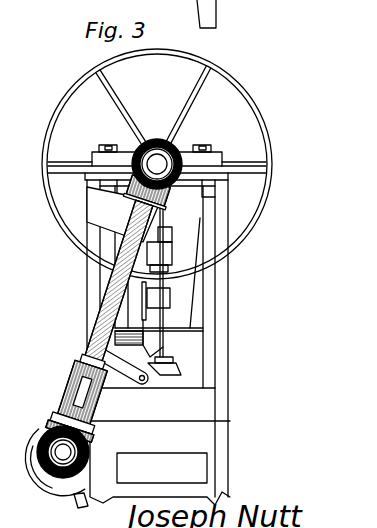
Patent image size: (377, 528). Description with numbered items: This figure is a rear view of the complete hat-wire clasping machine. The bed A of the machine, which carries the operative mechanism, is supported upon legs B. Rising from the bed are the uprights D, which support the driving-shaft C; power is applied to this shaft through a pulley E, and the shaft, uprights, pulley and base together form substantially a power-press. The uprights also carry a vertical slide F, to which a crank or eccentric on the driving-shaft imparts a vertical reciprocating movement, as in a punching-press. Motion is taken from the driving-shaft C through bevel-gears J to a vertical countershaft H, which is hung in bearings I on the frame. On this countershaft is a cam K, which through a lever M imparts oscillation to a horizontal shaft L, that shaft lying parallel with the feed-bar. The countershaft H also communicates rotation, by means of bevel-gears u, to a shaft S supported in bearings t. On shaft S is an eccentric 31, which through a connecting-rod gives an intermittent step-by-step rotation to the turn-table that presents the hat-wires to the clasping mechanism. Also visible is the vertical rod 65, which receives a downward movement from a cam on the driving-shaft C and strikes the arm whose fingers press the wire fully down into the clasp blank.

The pulley E is at (157, 164).
The driving-shaft C is at (157, 164).
The bevel-gears J is at (170, 193).
The bearings I is at (123, 214).
The vertical countershaft H is at (106, 293).
The uprights D is at (157, 321).
The vertical slide F is at (166, 278).
The bearings t is at (152, 319).
The vertical rod 65 is at (160, 357).
The cam K is at (80, 361).
The lever M is at (119, 365).
The horizontal shaft L is at (83, 392).
The bed A is at (158, 404).
The legs B is at (160, 463).
The bevel-gears u is at (52, 428).
The shaft S is at (63, 452).
The eccentric 31 is at (55, 468).